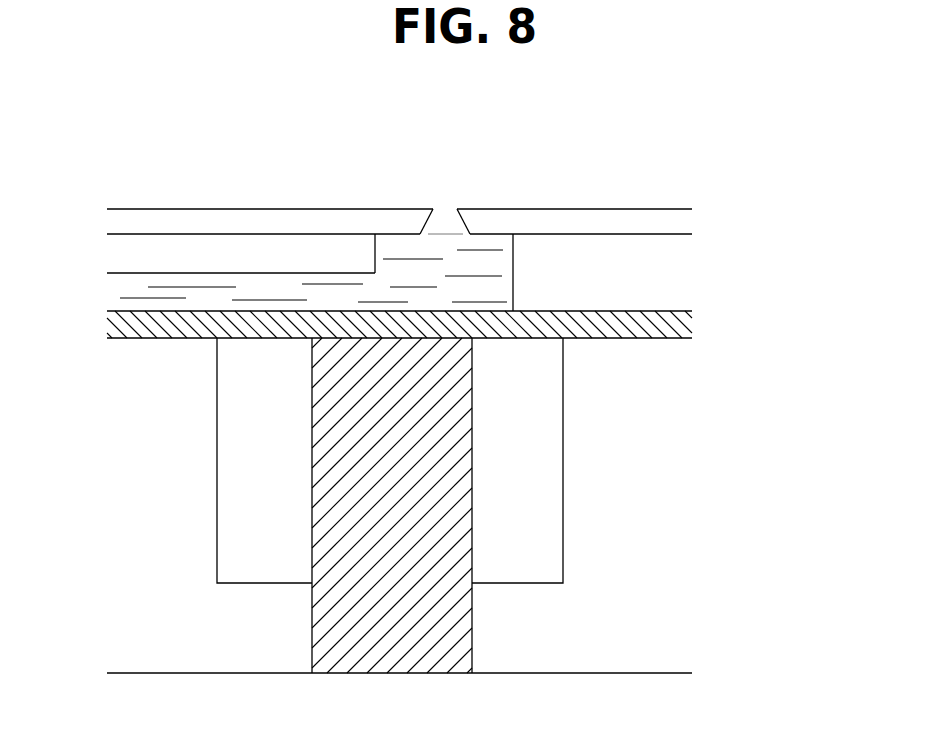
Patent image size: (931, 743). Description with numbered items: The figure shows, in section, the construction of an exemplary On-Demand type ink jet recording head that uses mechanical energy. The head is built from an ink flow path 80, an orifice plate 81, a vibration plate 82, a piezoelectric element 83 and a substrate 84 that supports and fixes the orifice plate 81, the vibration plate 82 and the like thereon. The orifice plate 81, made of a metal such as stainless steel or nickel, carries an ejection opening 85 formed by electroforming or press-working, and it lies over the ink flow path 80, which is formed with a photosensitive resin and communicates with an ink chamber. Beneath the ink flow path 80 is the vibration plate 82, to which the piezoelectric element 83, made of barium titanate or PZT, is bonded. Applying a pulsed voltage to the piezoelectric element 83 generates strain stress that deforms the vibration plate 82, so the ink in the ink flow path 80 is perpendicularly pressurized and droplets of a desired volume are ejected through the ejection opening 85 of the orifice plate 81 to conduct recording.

The ink flow path 80 is at (258, 287).
The orifice plate 81 is at (648, 224).
The vibration plate 82 is at (633, 337).
The piezoelectric element 83 is at (448, 496).
The substrate 84 is at (578, 424).
The ejection opening 85 is at (443, 222).